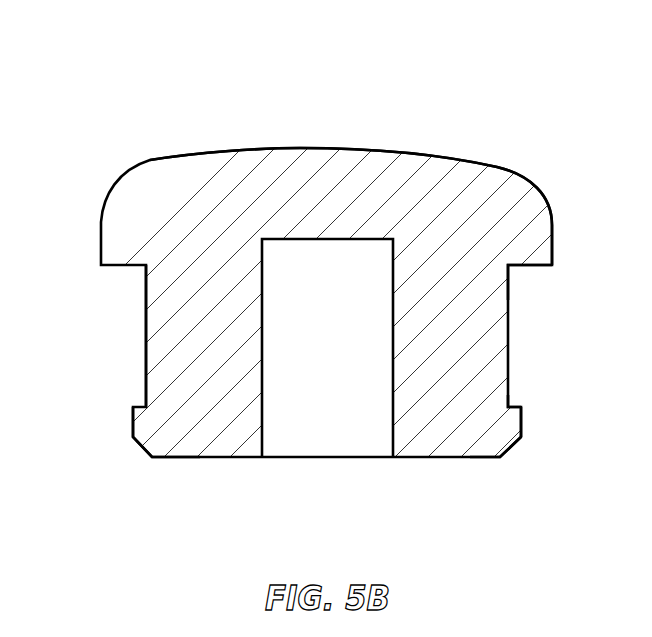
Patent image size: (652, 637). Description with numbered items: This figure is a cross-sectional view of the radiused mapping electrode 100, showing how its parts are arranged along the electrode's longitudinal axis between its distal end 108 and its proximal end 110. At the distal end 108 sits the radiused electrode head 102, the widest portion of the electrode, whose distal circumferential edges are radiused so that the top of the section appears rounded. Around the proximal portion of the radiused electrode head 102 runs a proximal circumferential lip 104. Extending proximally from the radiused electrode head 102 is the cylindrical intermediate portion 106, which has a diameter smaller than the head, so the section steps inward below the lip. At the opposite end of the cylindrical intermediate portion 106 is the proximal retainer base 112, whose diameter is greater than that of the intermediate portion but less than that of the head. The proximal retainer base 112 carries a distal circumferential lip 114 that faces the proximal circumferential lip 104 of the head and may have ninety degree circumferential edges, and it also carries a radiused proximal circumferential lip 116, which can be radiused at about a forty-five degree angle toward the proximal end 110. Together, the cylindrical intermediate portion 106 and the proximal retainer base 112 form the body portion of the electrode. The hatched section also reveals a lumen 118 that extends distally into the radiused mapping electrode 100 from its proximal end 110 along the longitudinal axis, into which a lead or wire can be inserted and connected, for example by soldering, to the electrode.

The radiused mapping electrode 100 is at (165, 104).
The radiused electrode head 102 is at (468, 173).
The proximal circumferential lip 104 is at (530, 265).
The cylindrical intermediate portion 106 is at (175, 333).
The distal end 108 is at (328, 150).
The proximal end 110 is at (185, 458).
The proximal retainer base 112 is at (520, 422).
The distal circumferential lip 114 is at (517, 405).
The radiused proximal circumferential lip 116 is at (512, 448).
The central opening 118 is at (327, 410).